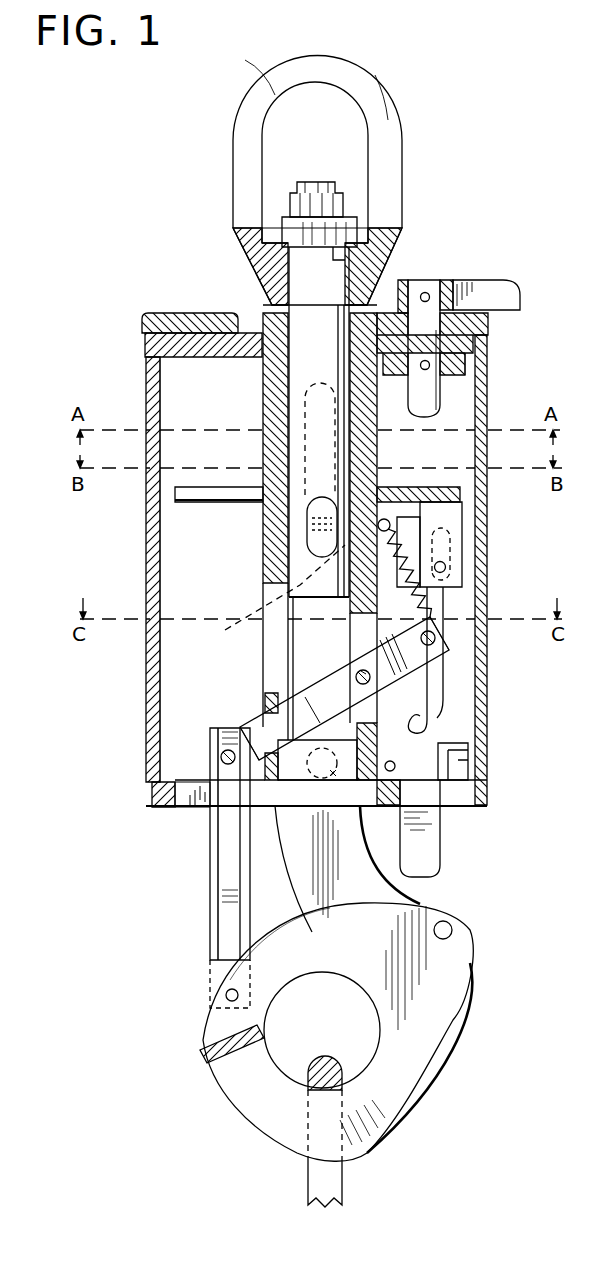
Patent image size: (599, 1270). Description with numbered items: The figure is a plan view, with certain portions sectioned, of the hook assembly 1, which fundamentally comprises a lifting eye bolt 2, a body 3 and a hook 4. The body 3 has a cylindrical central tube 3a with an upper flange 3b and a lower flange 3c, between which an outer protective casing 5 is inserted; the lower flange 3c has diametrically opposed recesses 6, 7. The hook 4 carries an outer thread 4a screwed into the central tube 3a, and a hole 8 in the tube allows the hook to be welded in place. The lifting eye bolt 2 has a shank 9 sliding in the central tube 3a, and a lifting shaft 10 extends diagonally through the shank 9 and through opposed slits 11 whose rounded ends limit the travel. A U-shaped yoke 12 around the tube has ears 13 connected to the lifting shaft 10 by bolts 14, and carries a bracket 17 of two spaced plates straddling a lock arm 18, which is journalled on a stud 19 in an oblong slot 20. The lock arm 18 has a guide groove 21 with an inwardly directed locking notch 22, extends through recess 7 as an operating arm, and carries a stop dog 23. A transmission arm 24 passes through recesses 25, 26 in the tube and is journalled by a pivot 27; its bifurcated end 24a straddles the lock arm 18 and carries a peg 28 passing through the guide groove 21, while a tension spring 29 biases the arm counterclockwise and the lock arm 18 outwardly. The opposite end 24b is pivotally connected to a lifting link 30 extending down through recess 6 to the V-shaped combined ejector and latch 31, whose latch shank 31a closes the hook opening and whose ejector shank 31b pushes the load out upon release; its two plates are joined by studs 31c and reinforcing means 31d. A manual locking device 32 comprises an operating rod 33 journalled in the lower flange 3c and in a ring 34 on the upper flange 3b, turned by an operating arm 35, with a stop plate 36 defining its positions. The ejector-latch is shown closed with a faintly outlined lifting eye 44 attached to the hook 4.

The hook assembly 1 is at (146, 536).
The lifting eye bolt 2 is at (372, 100).
The body 3 is at (262, 410).
The central tube 3a is at (262, 312).
The upper flange 3b is at (150, 345).
The lower flange 3c is at (160, 805).
The hook 4 is at (438, 1071).
The outer thread 4a is at (248, 835).
The outer protective casing 5 is at (150, 578).
The recess 6 is at (188, 795).
The recess 7 is at (400, 800).
The hole 8 is at (438, 845).
The shank 9 is at (318, 320).
The lifting shaft 10 is at (313, 545).
The slits 11 is at (300, 388).
The yoke 12 is at (465, 492).
The ears 13 is at (226, 628).
The bolts 14 is at (312, 522).
The bracket 17 is at (450, 510).
The lock arm 18 is at (395, 767).
The stud 19 is at (445, 562).
The oblong slot 20 is at (452, 538).
The guide groove 21 is at (450, 680).
The locking notch 22 is at (470, 727).
The stop dog 23 is at (440, 798).
The transmission arm 24 is at (348, 710).
The end of the transmission arm 24a is at (447, 648).
The end of the transmission arm 24b is at (220, 757).
The recess 25 is at (270, 692).
The recess 26 is at (363, 723).
The pivot 27 is at (356, 674).
The peg 28 is at (435, 640).
The tension spring 29 is at (490, 592).
The lifting link 30 is at (227, 818).
The combined ejector and latch 31 is at (432, 964).
The latch shank 31a is at (292, 956).
The ejector shank 31b is at (393, 1063).
The studs 31c is at (453, 936).
The reinforcing means 31d is at (215, 1045).
The locking device 32 is at (456, 290).
The operating rod 33 is at (432, 398).
The ring 34 is at (190, 325).
The operating arm 35 is at (482, 293).
The stop plate 36 is at (452, 372).
The lifting eye 44 is at (330, 1174).